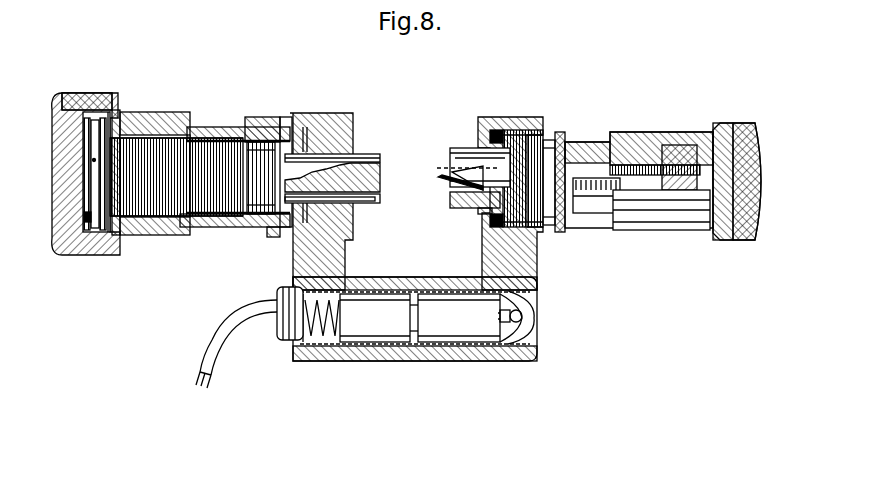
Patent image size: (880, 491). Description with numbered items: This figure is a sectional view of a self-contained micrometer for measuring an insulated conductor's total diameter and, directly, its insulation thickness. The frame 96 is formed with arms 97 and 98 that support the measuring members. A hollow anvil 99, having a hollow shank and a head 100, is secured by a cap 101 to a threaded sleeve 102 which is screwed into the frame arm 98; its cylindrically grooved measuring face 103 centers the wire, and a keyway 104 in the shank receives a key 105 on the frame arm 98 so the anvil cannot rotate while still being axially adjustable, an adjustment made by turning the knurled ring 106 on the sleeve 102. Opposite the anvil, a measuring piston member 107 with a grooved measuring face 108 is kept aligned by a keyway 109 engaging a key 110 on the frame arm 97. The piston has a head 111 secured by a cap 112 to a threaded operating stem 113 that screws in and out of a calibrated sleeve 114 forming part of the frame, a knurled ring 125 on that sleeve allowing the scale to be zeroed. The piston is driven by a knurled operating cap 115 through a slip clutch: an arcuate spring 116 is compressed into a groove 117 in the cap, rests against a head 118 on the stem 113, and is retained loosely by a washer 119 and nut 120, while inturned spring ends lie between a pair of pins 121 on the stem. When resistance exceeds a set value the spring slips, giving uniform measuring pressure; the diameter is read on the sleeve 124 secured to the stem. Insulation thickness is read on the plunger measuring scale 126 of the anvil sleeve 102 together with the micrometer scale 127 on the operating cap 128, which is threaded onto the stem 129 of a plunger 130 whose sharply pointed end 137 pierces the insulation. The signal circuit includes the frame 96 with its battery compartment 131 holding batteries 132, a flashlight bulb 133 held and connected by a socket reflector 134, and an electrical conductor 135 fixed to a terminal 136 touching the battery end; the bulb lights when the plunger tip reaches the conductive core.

The frame 96 is at (436, 362).
The frame arm 97 is at (347, 258).
The frame arm 98 is at (488, 261).
The hollow anvil 99 is at (462, 148).
The head 100 is at (513, 133).
The cap 101 is at (499, 131).
The threaded sleeve 102 is at (558, 132).
The grooved measuring face 103 is at (450, 173).
The keyway 104 is at (468, 209).
The key 105 is at (483, 212).
The knurled ring 106 is at (562, 234).
The measuring piston member 107 is at (368, 157).
The measuring face 108 is at (380, 181).
The keyway 109 is at (379, 200).
The key 110 is at (350, 196).
The head 111 is at (285, 117).
The cap 112 is at (262, 142).
The threaded operating stem 113 is at (210, 127).
The calibrated sleeve 114 is at (235, 228).
The knurled operating cap 115 is at (54, 190).
The arcuate spring 116 is at (86, 218).
The groove 117 is at (97, 118).
The head 118 is at (88, 143).
The washer 119 is at (100, 204).
The nut 120 is at (126, 121).
The pins 121 is at (95, 197).
The sleeve 124 is at (163, 112).
The knurled ring 125 is at (272, 238).
The plunger measuring scale 126 is at (592, 197).
The micrometer scale 127 is at (624, 225).
The operating cap 128 is at (763, 190).
The threaded stem 129 is at (672, 168).
The plunger 130 is at (612, 166).
The electric battery compartment 131 is at (383, 347).
The electric batteries 132 is at (360, 337).
The flashlight bulb 133 is at (523, 318).
The socket reflector 134 is at (530, 334).
The electrical conductor 135 is at (213, 370).
The terminal 136 is at (333, 324).
The sharply pointed end 137 is at (445, 182).